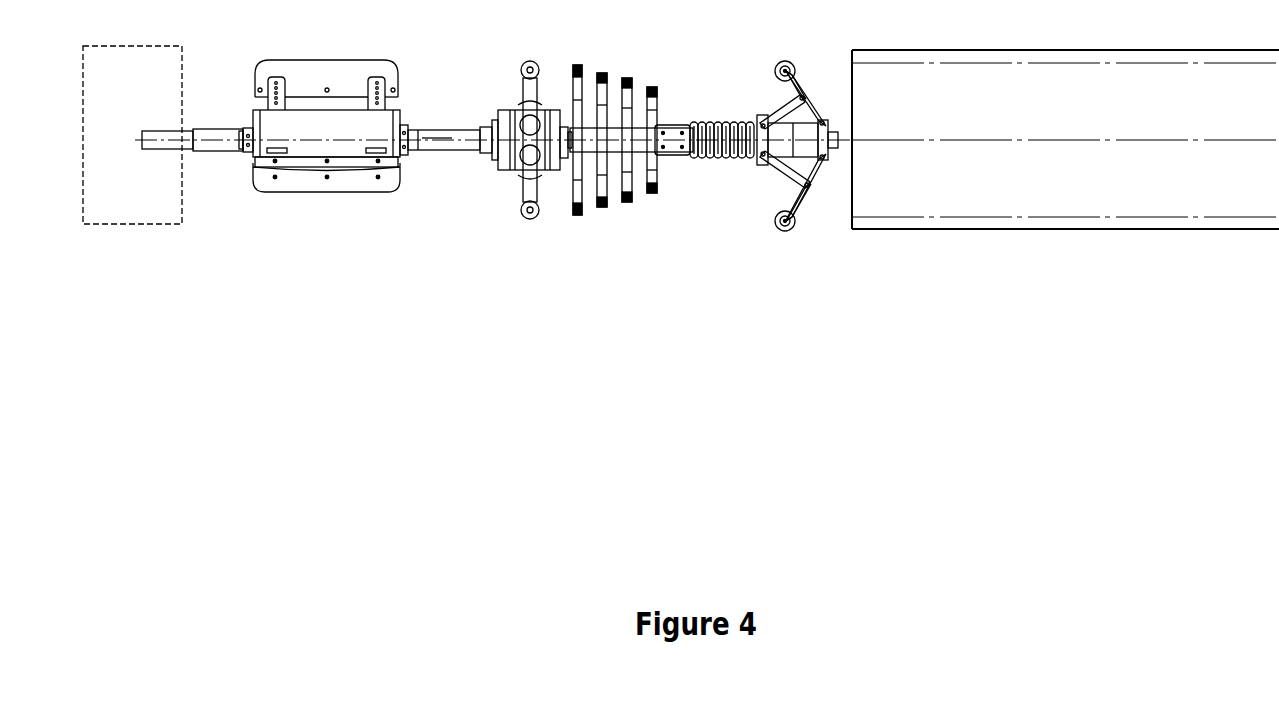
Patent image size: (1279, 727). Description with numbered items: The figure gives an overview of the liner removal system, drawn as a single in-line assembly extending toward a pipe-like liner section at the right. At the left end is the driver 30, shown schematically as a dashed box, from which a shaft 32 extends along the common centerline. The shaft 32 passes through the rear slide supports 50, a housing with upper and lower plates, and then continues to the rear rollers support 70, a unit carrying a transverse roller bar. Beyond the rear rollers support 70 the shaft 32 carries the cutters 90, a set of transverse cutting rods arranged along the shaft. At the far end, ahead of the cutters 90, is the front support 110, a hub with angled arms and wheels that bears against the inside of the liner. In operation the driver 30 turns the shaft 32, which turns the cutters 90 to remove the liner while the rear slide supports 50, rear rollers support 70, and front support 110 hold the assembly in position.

The driver 30 is at (129, 224).
The shaft 32 is at (219, 148).
The rear slide supports 50 is at (373, 214).
The rear rollers support 70 is at (546, 226).
The cutters 90 is at (651, 214).
The front support 110 is at (766, 243).